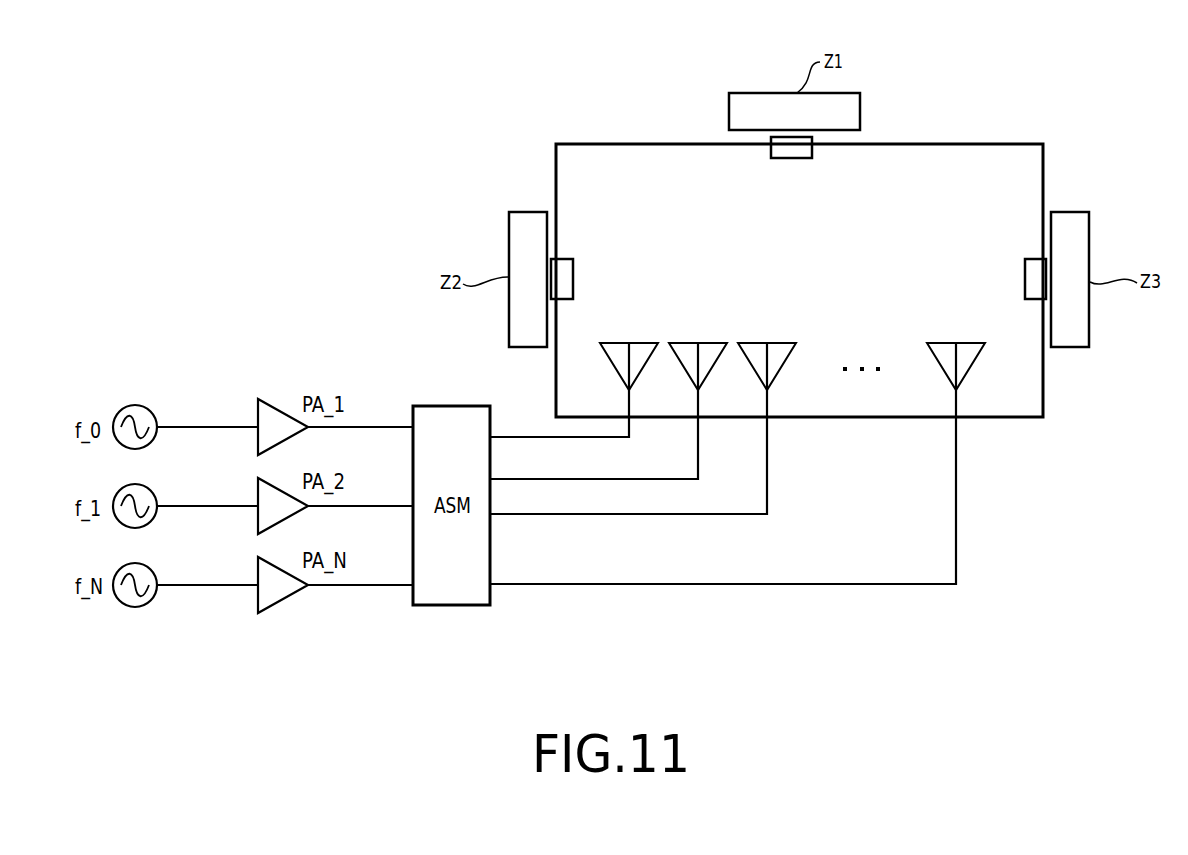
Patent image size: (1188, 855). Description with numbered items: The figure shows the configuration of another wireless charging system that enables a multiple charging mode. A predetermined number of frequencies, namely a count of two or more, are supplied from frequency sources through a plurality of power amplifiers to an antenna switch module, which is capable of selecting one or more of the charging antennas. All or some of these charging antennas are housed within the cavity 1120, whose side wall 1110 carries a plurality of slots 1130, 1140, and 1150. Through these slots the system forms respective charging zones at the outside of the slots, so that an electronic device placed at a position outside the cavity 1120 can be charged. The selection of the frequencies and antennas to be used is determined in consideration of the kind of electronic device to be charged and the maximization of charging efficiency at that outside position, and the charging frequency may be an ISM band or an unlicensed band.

The side wall 1110 is at (1044, 380).
The cavity 1120 is at (1001, 175).
The slot 1130 is at (790, 158).
The slot 1140 is at (564, 258).
The slot 1150 is at (1031, 258).